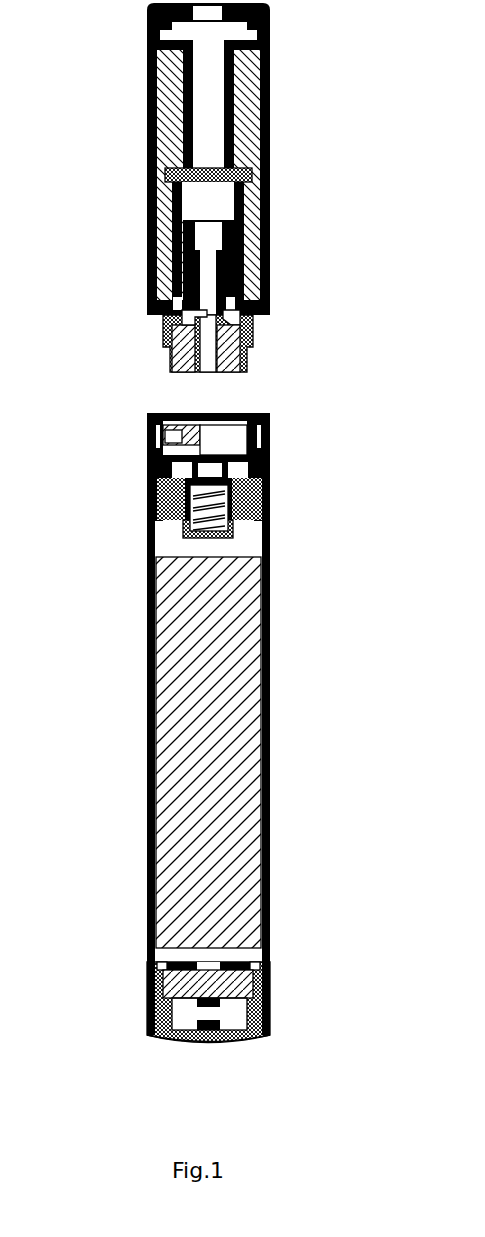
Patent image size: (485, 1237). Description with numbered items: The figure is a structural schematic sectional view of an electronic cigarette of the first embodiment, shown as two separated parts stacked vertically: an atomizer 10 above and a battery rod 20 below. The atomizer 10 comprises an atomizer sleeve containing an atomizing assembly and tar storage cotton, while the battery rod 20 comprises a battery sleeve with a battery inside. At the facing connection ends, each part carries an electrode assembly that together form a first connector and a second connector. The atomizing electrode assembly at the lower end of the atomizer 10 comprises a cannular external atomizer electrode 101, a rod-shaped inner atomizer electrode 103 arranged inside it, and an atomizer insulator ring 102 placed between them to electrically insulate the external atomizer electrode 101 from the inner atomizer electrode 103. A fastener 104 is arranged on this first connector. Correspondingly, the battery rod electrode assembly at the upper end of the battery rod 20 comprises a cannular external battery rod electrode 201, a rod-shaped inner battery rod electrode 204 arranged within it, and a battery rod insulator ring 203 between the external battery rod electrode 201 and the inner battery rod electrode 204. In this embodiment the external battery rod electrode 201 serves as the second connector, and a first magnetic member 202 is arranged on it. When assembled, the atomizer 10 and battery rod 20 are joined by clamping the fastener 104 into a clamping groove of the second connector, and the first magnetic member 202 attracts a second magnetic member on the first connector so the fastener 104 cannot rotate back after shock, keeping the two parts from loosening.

The atomizer 10 is at (270, 140).
The external atomizer electrode 101 is at (252, 322).
The atomizer insulator ring 102 is at (170, 367).
The inner atomizer electrode 103 is at (166, 357).
The fastener 104 is at (253, 346).
The battery rod 20 is at (270, 738).
The external battery rod electrode 201 is at (268, 487).
The first magnetic member 202 is at (268, 460).
The battery rod insulator ring 203 is at (150, 515).
The inner battery rod electrode 204 is at (150, 496).